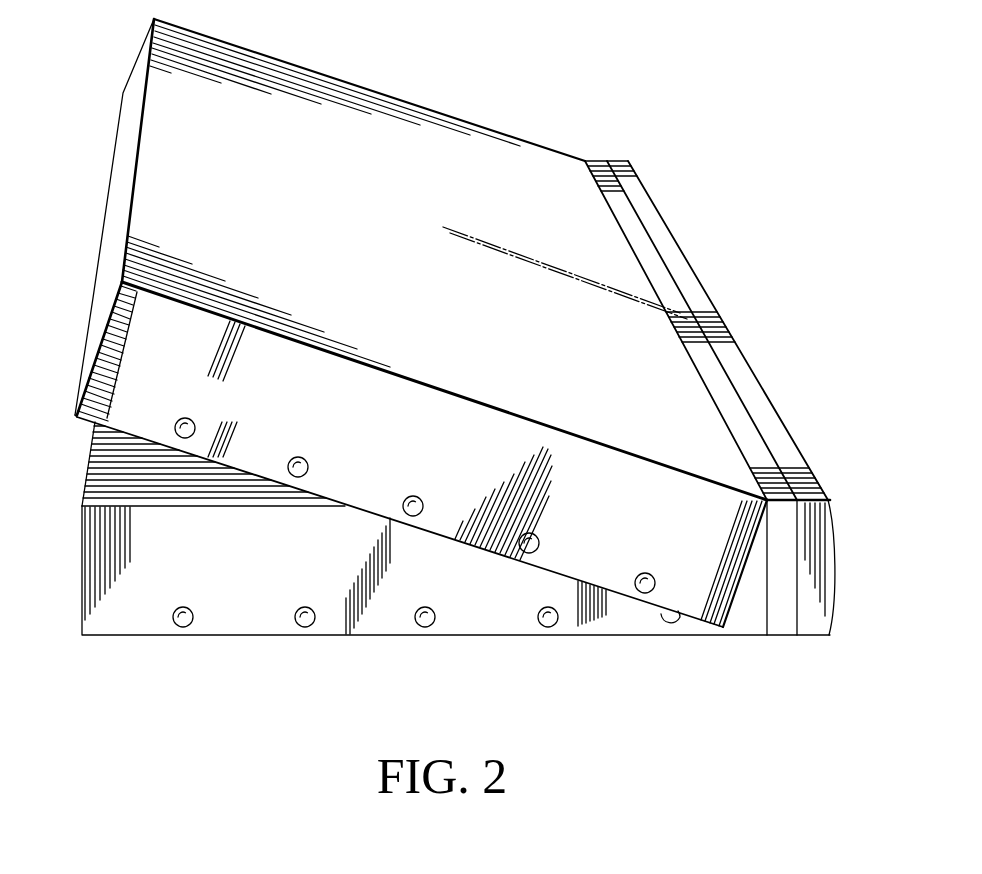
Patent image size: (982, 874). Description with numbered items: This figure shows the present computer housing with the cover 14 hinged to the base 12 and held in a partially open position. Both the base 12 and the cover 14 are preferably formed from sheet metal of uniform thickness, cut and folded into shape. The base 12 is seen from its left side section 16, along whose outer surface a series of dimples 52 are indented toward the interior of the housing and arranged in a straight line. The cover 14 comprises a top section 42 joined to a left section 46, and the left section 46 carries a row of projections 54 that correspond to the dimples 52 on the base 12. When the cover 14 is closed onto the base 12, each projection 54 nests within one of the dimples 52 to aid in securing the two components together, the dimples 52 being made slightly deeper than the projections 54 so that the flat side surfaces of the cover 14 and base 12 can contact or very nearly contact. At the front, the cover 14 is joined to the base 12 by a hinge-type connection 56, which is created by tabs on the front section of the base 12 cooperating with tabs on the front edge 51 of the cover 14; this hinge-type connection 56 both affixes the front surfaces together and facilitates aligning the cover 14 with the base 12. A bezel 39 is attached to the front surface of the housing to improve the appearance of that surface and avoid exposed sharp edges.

The base 12 is at (473, 358).
The cover 14 is at (451, 316).
The left side section 16 is at (493, 554).
The bezel 39 is at (818, 585).
The top section 42 is at (404, 266).
The left section 46 is at (422, 454).
The front edge 51 is at (652, 276).
The dimples 52 is at (189, 625).
The projections 54 is at (194, 431).
The hinge-type connection 56 is at (723, 397).